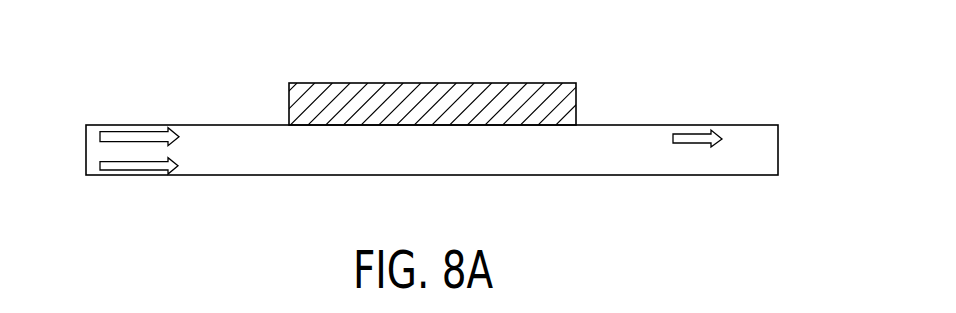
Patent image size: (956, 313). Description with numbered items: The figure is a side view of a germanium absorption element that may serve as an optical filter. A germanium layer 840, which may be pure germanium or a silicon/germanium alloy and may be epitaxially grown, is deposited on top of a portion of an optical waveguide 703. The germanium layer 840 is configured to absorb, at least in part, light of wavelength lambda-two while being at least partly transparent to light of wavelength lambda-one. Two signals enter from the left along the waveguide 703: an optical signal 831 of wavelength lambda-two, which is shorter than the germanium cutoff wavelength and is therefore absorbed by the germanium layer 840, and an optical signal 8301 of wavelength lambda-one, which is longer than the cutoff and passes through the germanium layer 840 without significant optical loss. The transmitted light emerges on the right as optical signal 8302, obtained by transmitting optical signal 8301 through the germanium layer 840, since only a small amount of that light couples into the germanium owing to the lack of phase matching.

The optical waveguide 703 is at (779, 153).
The germanium layer 840 is at (477, 82).
The optical signal 831 is at (90, 128).
The optical signal 8301 is at (97, 164).
The optical signal 8302 is at (702, 128).